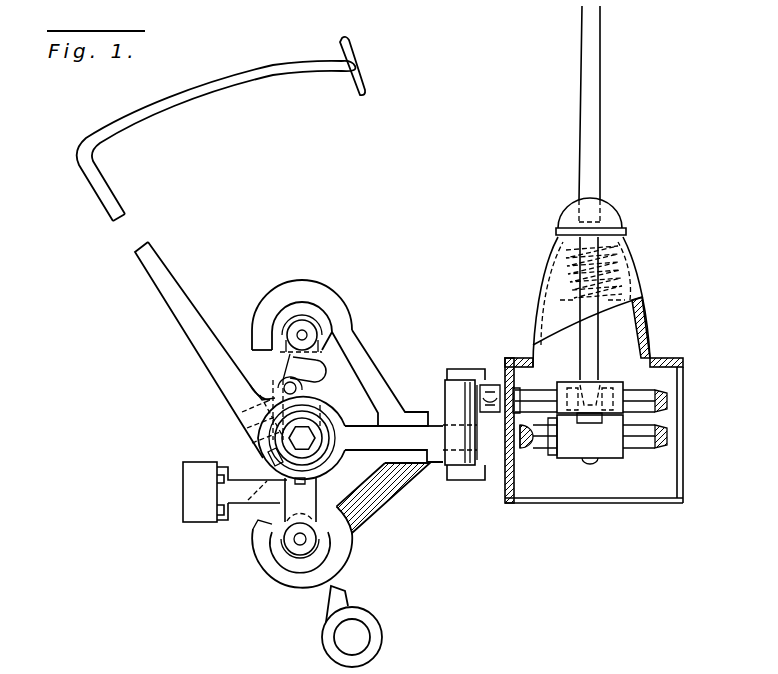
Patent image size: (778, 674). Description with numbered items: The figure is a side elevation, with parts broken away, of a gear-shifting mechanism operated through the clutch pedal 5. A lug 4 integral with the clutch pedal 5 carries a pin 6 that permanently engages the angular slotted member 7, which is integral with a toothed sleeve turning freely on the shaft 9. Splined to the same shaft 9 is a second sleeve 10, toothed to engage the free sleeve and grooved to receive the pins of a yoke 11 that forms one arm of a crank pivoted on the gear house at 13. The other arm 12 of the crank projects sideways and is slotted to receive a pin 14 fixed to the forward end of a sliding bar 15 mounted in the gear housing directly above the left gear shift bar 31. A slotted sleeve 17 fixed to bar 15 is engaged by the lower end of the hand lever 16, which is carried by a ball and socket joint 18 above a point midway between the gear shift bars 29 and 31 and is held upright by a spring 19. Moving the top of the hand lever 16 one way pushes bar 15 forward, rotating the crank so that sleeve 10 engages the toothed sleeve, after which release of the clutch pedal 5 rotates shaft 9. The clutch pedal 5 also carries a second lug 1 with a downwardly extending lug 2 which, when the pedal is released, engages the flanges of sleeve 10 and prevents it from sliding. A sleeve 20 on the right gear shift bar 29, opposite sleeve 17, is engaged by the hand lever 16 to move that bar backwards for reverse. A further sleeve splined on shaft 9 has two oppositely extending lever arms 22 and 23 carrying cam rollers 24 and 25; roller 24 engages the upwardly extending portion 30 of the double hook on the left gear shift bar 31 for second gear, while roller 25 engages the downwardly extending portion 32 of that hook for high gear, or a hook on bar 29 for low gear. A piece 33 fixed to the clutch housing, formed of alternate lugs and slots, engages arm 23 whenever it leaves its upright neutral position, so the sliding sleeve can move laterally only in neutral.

The second lug 1 is at (242, 414).
The downwardly extending lug 2 is at (246, 427).
The lug 4 is at (252, 380).
The clutch pedal 5 is at (192, 313).
The pin 6 is at (284, 380).
The angular slotted member 7 is at (312, 380).
The shaft 9 is at (293, 440).
The second sleeve 10 is at (270, 460).
The yoke 11 is at (353, 412).
The other arm of the crank 12 is at (480, 395).
The pivot on gear house 13 is at (450, 367).
The pin 14 is at (492, 387).
The sliding bar 15 is at (538, 393).
The hand lever 16 is at (597, 341).
The sleeve 17 is at (645, 345).
The ball and socket joint 18 is at (605, 231).
The spring 19 is at (618, 264).
The sleeve 20 is at (614, 456).
The lever arm 22 is at (320, 392).
The lever arm 23 is at (312, 497).
The cam roller 24 is at (322, 338).
The cam roller 25 is at (292, 522).
The right gear shift bar 29 is at (552, 450).
The upwardly extending portion 30 is at (310, 290).
The left gear shift bar 31 is at (518, 449).
The downwardly extending portion 32 is at (263, 565).
The piece 33 is at (228, 495).